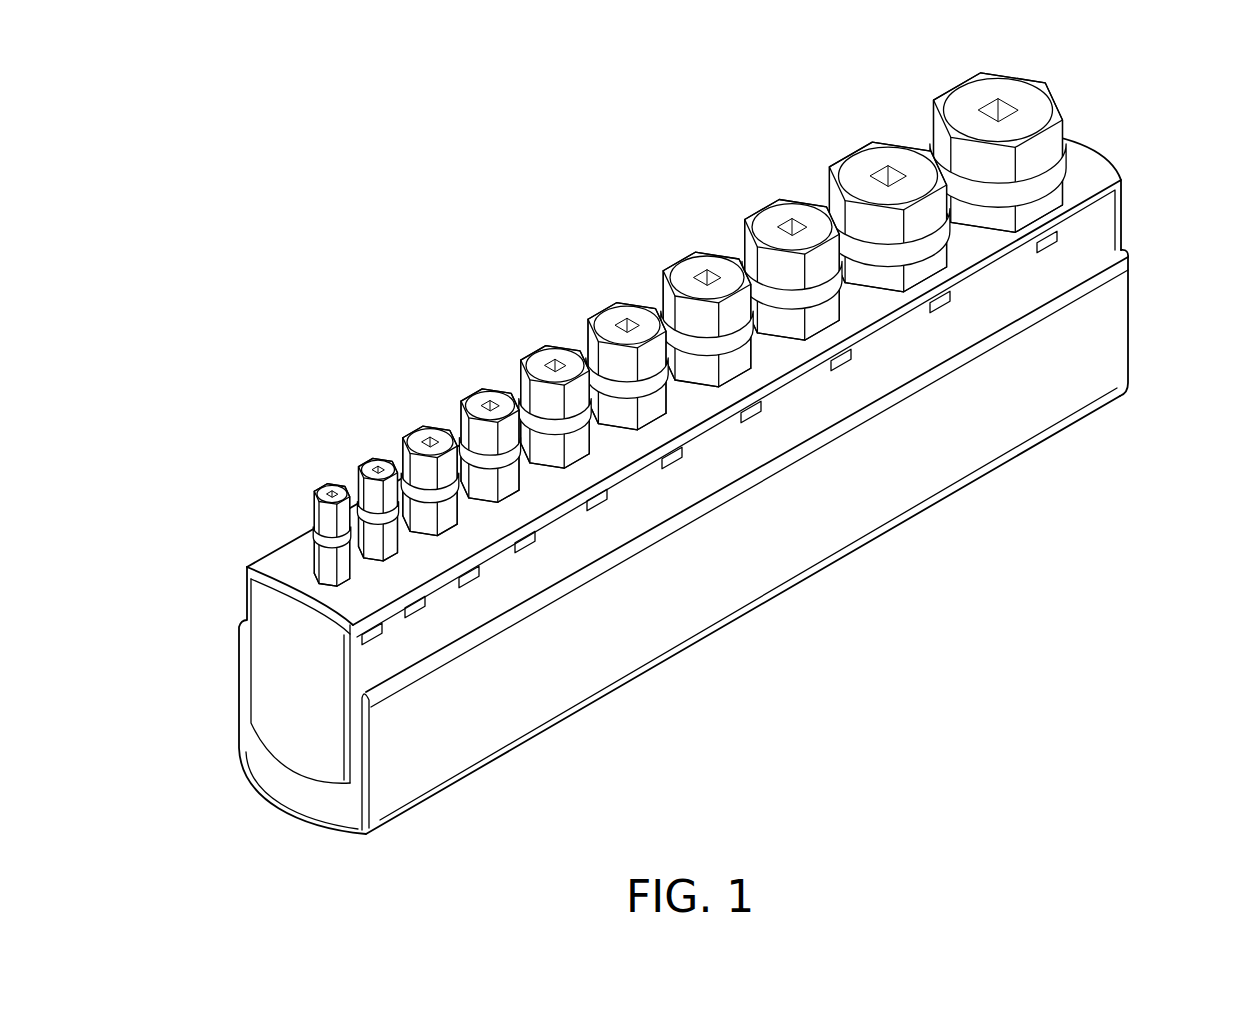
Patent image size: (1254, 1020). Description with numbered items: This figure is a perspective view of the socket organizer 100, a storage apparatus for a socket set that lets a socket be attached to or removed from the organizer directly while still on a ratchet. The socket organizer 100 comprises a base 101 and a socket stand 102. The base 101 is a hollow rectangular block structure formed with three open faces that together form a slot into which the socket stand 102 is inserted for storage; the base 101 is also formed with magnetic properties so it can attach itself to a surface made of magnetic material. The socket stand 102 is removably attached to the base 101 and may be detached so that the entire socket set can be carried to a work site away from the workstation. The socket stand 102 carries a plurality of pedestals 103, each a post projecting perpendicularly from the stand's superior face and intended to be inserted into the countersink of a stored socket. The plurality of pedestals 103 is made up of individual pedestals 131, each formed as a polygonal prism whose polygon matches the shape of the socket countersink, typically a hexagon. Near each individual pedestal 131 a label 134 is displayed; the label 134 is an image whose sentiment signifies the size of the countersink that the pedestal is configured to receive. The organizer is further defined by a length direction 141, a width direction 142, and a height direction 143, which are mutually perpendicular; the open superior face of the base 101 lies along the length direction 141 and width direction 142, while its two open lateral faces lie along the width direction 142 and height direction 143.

The socket organizer 100 is at (212, 230).
The base 101 is at (868, 512).
The socket stand 102 is at (273, 573).
The plurality of pedestals 103 is at (900, 35).
The individual pedestal 131 is at (553, 367).
The label 134 is at (598, 506).
The length direction 141 is at (898, 597).
The width direction 142 is at (318, 877).
The height direction 143 is at (1215, 145).